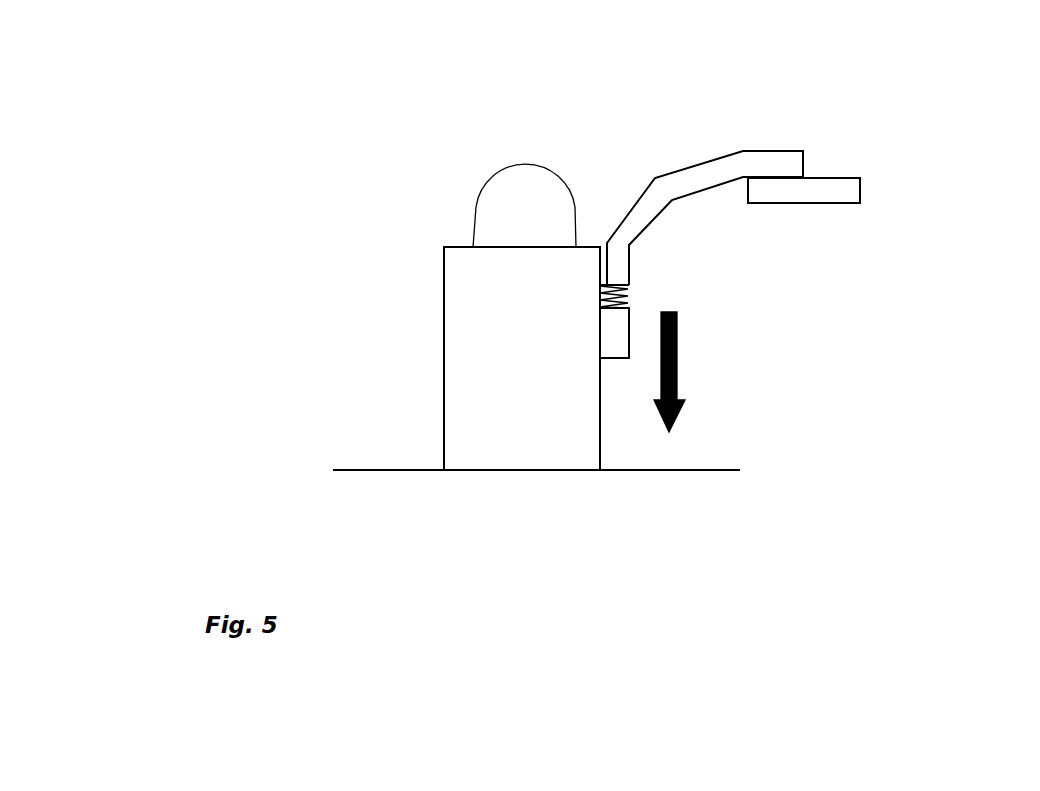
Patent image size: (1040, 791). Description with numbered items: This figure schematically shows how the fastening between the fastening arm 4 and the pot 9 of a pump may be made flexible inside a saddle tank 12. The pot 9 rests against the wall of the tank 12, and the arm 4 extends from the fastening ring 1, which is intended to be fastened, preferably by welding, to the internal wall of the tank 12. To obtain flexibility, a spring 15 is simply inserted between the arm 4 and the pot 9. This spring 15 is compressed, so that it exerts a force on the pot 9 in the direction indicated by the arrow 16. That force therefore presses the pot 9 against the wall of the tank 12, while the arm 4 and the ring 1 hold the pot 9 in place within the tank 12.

The fastening ring 1 is at (862, 191).
The fastening arm 4 is at (779, 151).
The pot 9 is at (474, 401).
The saddle tank 12 is at (716, 470).
The spring 15 is at (630, 299).
The arrow 16 is at (686, 378).